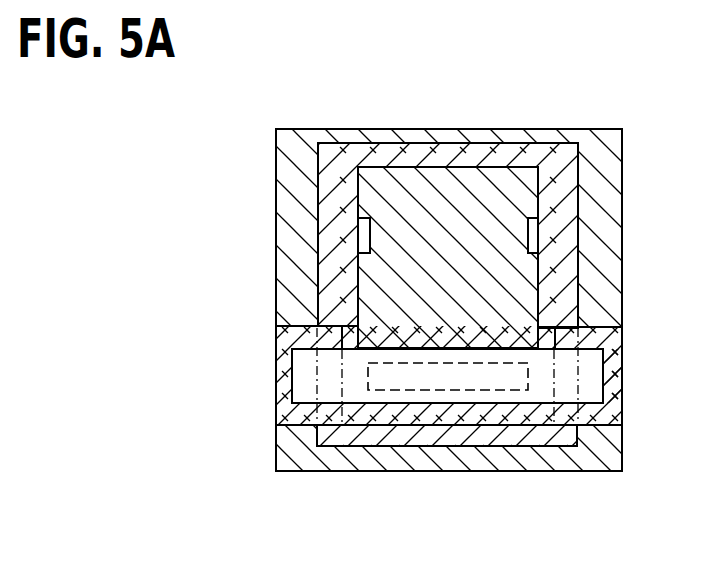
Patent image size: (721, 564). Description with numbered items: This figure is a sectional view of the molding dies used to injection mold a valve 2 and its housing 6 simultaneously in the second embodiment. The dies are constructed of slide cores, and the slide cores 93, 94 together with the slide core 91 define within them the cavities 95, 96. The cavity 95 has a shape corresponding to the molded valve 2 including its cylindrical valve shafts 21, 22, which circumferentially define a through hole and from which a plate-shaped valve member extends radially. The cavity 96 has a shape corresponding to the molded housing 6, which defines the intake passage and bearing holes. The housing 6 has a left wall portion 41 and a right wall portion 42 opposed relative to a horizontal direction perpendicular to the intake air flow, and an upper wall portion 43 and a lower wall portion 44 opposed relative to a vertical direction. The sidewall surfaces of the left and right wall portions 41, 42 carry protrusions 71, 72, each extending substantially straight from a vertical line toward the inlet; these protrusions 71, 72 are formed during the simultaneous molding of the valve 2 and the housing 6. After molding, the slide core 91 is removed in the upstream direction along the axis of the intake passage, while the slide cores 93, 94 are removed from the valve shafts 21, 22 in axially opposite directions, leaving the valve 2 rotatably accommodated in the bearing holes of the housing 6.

The valve 2 is at (477, 392).
The housing 6 is at (440, 150).
The upper wall portion 43 is at (449, 257).
The left wall portion 41 is at (323, 240).
The right wall portion 42 is at (573, 229).
The protrusion 71 is at (376, 250).
The protrusion 72 is at (526, 214).
The cavity 96 is at (579, 148).
The slide core 93 is at (283, 381).
The slide core 94 is at (606, 380).
The cavity 95 is at (358, 350).
The valve shaft 21 is at (292, 428).
The valve shaft 22 is at (583, 404).
The lower wall portion 44 is at (387, 438).
The slide core 91 is at (443, 462).